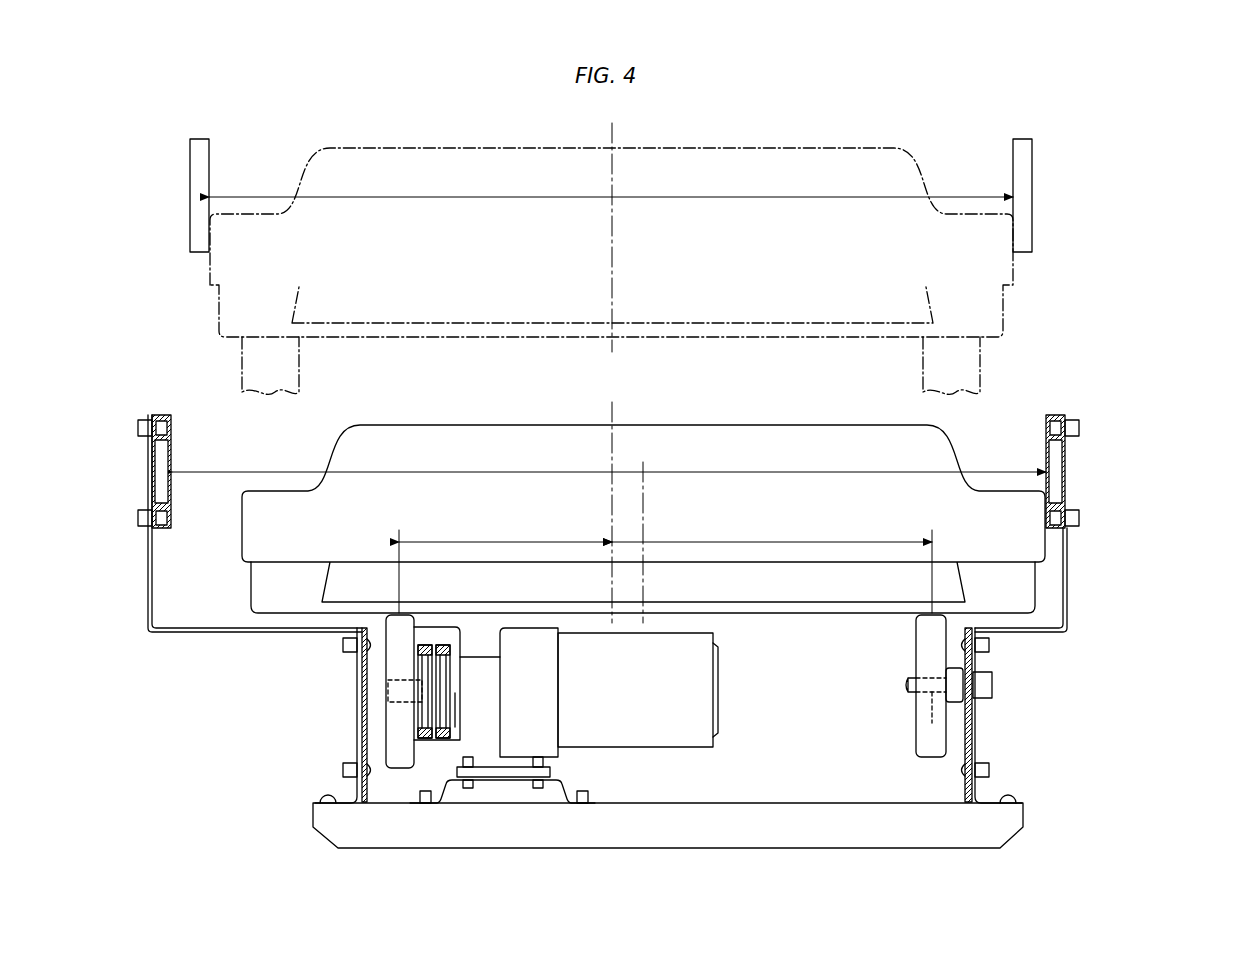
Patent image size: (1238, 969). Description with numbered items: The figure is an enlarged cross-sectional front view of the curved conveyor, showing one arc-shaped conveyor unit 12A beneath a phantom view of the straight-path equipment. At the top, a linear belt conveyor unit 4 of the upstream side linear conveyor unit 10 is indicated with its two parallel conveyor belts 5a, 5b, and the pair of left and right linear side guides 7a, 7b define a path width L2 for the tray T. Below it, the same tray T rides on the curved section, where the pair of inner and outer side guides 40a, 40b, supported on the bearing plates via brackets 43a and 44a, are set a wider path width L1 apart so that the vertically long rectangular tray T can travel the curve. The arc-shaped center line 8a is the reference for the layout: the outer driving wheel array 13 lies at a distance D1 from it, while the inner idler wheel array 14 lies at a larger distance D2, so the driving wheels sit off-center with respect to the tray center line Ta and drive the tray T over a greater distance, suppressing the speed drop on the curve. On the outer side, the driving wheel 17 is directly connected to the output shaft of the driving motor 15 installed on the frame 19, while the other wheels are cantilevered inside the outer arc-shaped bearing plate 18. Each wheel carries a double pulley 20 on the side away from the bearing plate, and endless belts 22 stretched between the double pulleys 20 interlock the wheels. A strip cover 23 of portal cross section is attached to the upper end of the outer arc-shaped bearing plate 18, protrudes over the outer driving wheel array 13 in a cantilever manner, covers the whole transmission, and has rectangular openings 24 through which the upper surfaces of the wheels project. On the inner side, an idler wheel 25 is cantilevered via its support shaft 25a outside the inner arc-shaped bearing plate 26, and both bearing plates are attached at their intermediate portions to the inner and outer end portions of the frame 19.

The linear belt conveyor unit 4 is at (988, 355).
The conveyor belt 5a is at (285, 365).
The conveyor belt 5b is at (947, 368).
The linear side guide 7a is at (197, 204).
The linear side guide 7b is at (1022, 192).
The arc-shaped center line 8a is at (611, 373).
The upstream side linear conveyor unit 10 is at (212, 363).
The arc-shaped conveyor unit 12A is at (985, 708).
The outer driving wheel array 13 is at (399, 772).
The inner idler wheel array 14 is at (931, 760).
The driving motor 15 is at (637, 703).
The driving wheel 17 is at (397, 663).
The outer arc-shaped bearing plate 18 is at (362, 710).
The frame 19 is at (782, 822).
The double pulley 20 is at (432, 718).
The endless belt 22 is at (441, 740).
The strip cover 23 is at (440, 628).
The rectangular opening 24 is at (383, 628).
The idler wheel 25 is at (924, 650).
The support shaft 25a is at (930, 723).
The inner arc-shaped bearing plate 26 is at (972, 728).
The side guide 40a is at (172, 443).
The side guide 40b is at (1046, 452).
The bracket 43a is at (178, 632).
The bracket 44a is at (1068, 595).
The tray T is at (503, 172).
The tray center line Ta is at (645, 529).
The path width L1 is at (609, 461).
The path width L2 is at (611, 184).
The distance D1 is at (505, 566).
The distance D2 is at (772, 566).